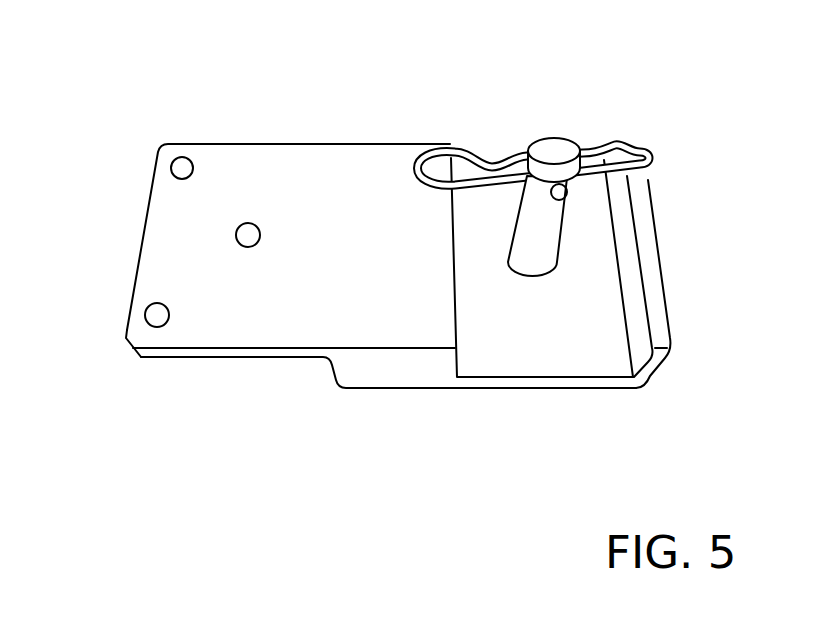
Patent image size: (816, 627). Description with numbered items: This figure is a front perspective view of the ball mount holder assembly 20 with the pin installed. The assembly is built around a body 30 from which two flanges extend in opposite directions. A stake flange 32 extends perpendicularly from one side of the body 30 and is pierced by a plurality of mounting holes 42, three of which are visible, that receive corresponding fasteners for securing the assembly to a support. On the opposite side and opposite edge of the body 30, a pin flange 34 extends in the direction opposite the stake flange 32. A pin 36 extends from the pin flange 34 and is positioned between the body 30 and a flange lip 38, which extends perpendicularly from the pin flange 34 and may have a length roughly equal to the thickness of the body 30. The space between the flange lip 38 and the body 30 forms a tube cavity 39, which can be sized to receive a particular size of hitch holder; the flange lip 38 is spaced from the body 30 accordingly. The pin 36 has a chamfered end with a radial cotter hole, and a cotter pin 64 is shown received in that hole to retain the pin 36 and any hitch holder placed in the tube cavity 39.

The ball mount holder assembly 20 is at (440, 93).
The body 30 is at (398, 373).
The stake flange 32 is at (284, 162).
The pin flange 34 is at (568, 383).
The pin 36 is at (552, 137).
The flange lip 38 is at (655, 362).
The tube cavity 39 is at (577, 329).
The mounting holes 42 is at (147, 313).
The cotter pin 64 is at (462, 150).